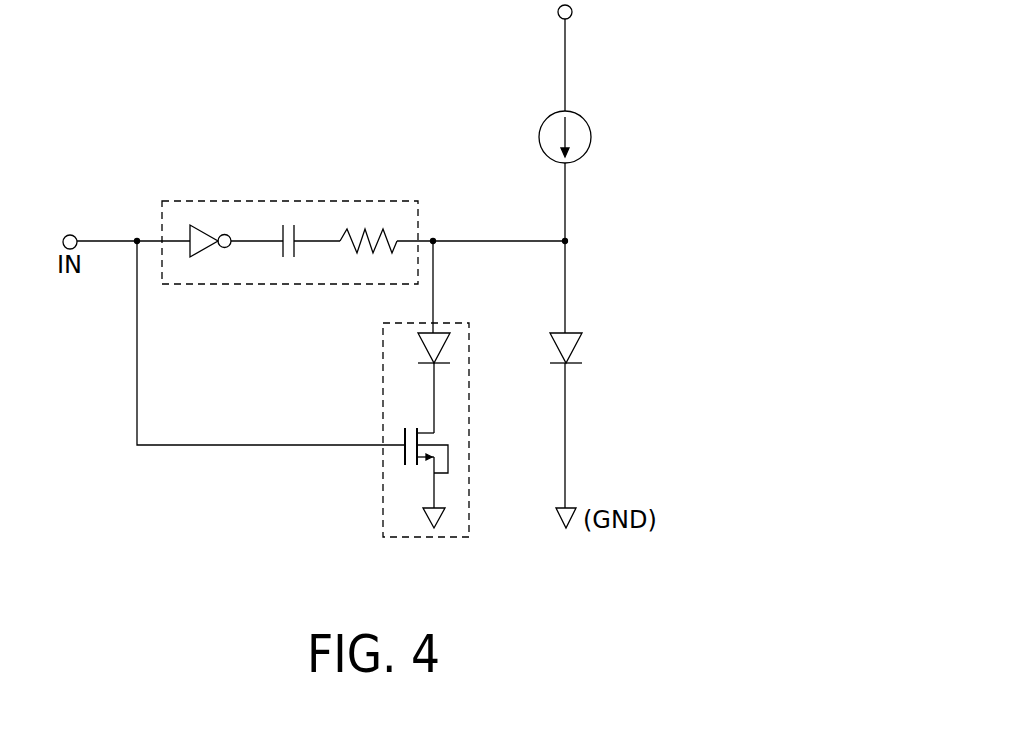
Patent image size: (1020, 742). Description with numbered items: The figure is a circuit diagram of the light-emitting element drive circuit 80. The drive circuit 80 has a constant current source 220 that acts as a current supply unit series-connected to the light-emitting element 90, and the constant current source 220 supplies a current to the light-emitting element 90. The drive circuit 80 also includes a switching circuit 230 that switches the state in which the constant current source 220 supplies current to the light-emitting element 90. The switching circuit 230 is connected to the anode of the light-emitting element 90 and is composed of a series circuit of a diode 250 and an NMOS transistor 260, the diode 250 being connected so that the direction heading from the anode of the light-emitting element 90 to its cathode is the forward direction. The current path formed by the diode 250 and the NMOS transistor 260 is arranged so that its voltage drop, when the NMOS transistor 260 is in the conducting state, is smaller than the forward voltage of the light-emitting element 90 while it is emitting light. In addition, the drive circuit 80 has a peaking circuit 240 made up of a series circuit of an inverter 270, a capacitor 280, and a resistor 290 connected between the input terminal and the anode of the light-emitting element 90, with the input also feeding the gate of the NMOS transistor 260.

The light-emitting element drive circuit 80 is at (357, 595).
The light-emitting element 90 is at (578, 348).
The constant current source 220 is at (591, 137).
The switching circuit 230 is at (450, 540).
The peaking circuit 240 is at (213, 201).
The diode 250 is at (428, 365).
The NMOS transistor 260 is at (403, 458).
The inverter 270 is at (203, 257).
The capacitor 280 is at (297, 258).
The resistor 290 is at (375, 254).